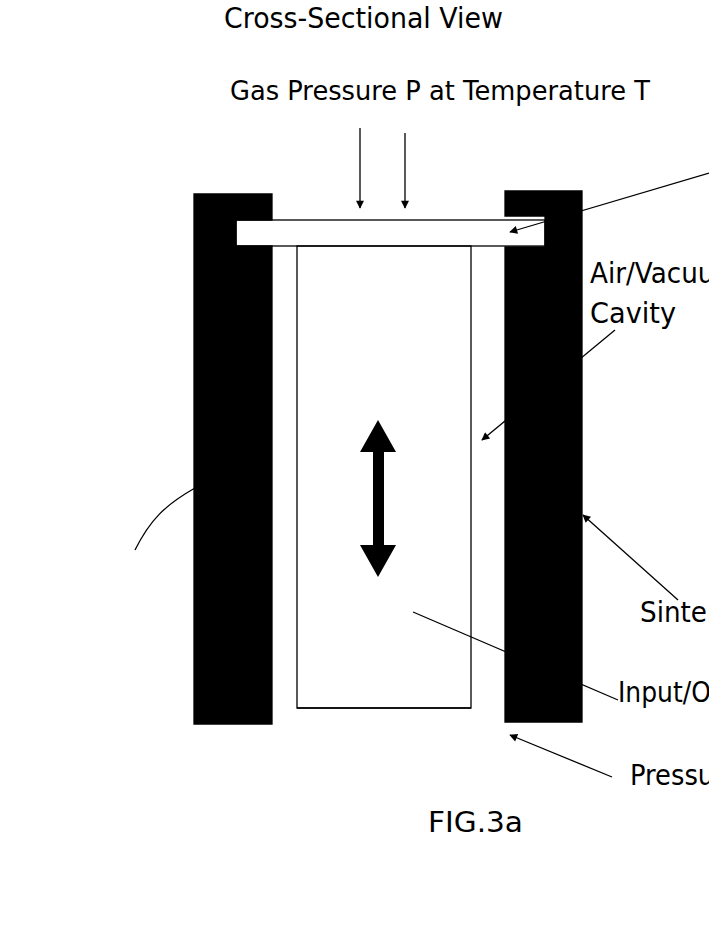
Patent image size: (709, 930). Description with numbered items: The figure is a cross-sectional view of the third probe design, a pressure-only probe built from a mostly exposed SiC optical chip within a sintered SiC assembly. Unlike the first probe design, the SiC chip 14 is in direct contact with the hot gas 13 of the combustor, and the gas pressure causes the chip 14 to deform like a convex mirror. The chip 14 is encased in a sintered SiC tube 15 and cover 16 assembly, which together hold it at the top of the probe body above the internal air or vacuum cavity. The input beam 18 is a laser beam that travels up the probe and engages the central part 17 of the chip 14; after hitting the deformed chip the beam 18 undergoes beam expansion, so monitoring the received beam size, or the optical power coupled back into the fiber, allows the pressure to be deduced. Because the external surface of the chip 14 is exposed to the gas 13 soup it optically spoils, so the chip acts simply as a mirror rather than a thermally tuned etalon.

The hot gas 13 is at (381, 165).
The SiC chip 14 is at (285, 233).
The sintered SiC tube 15 is at (195, 360).
The cover 16 is at (528, 190).
The central part 17 is at (363, 242).
The input beam 18 is at (375, 703).